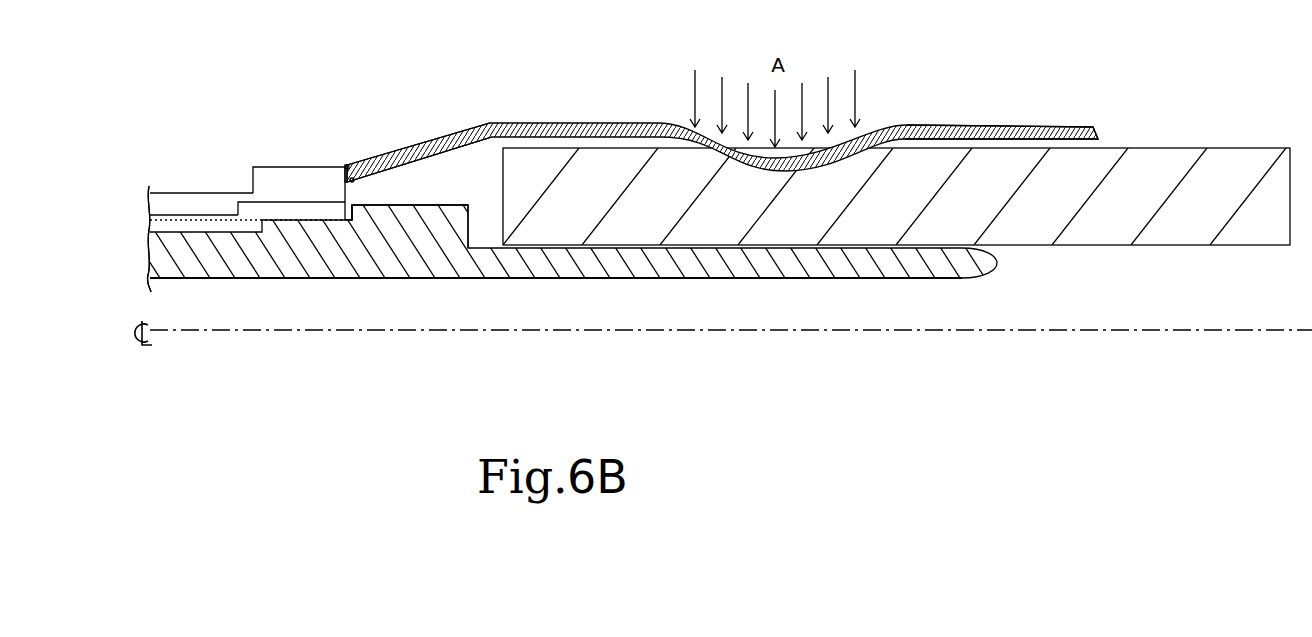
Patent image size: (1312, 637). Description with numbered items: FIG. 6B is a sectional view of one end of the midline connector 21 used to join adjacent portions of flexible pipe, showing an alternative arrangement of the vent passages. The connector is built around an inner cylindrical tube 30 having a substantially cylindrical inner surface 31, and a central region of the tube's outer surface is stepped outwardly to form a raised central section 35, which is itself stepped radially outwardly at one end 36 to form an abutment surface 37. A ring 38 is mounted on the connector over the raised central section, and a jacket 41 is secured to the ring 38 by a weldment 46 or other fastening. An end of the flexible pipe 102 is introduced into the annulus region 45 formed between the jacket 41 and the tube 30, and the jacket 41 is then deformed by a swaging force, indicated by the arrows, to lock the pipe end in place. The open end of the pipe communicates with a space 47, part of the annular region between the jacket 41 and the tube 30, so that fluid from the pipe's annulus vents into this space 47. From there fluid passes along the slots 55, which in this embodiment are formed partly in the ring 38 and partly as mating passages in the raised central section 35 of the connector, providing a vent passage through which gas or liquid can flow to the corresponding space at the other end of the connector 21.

The connector 21 is at (198, 134).
The flexible pipe 102 is at (1157, 230).
The inner cylindrical tube 30 is at (763, 267).
The inner surface 31 is at (433, 281).
The raised central section 35 is at (197, 247).
The end of raised portion 36 is at (440, 215).
The abutment surface 37 is at (360, 217).
The ring 38 is at (300, 178).
The jacket 41 is at (602, 122).
The annulus region 45 is at (1037, 142).
The weldment 46 is at (349, 165).
The space 47 is at (427, 177).
The slots 55 is at (258, 207).